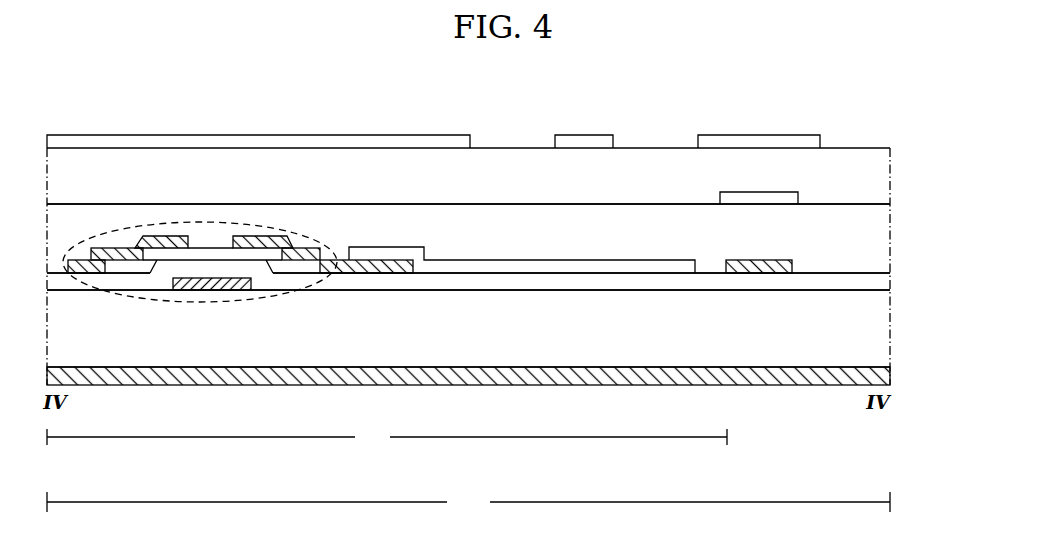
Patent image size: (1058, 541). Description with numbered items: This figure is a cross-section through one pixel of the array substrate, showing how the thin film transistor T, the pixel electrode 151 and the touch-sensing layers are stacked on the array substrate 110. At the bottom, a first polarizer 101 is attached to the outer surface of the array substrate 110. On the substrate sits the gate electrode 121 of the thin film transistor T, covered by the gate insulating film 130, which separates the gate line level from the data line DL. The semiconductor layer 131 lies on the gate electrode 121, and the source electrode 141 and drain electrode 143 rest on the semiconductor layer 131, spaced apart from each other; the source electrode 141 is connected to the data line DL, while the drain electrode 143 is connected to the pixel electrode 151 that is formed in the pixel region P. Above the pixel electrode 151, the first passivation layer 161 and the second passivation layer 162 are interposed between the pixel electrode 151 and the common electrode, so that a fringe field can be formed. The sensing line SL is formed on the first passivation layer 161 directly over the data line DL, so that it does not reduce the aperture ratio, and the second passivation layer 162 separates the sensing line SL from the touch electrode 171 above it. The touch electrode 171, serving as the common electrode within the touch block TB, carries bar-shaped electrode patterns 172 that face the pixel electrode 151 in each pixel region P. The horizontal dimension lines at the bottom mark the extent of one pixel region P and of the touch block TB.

The touch electrode 171 is at (198, 140).
The electrode patterns 172 is at (755, 140).
The second passivation layer 162 is at (877, 183).
The first passivation layer 161 is at (877, 246).
The gate insulating film 130 is at (877, 283).
The array substrate 110 is at (877, 338).
The first polarizer 101 is at (877, 378).
The source electrode 141 is at (158, 237).
The drain electrode 143 is at (248, 244).
The semiconductor layer 131 is at (162, 262).
The gate electrode 121 is at (206, 291).
The pixel electrode 151 is at (550, 266).
The sensing line SL is at (761, 205).
The data line DL is at (753, 273).
The thin film transistor T is at (272, 302).
The pixel region P is at (387, 437).
The touch block TB is at (468, 502).